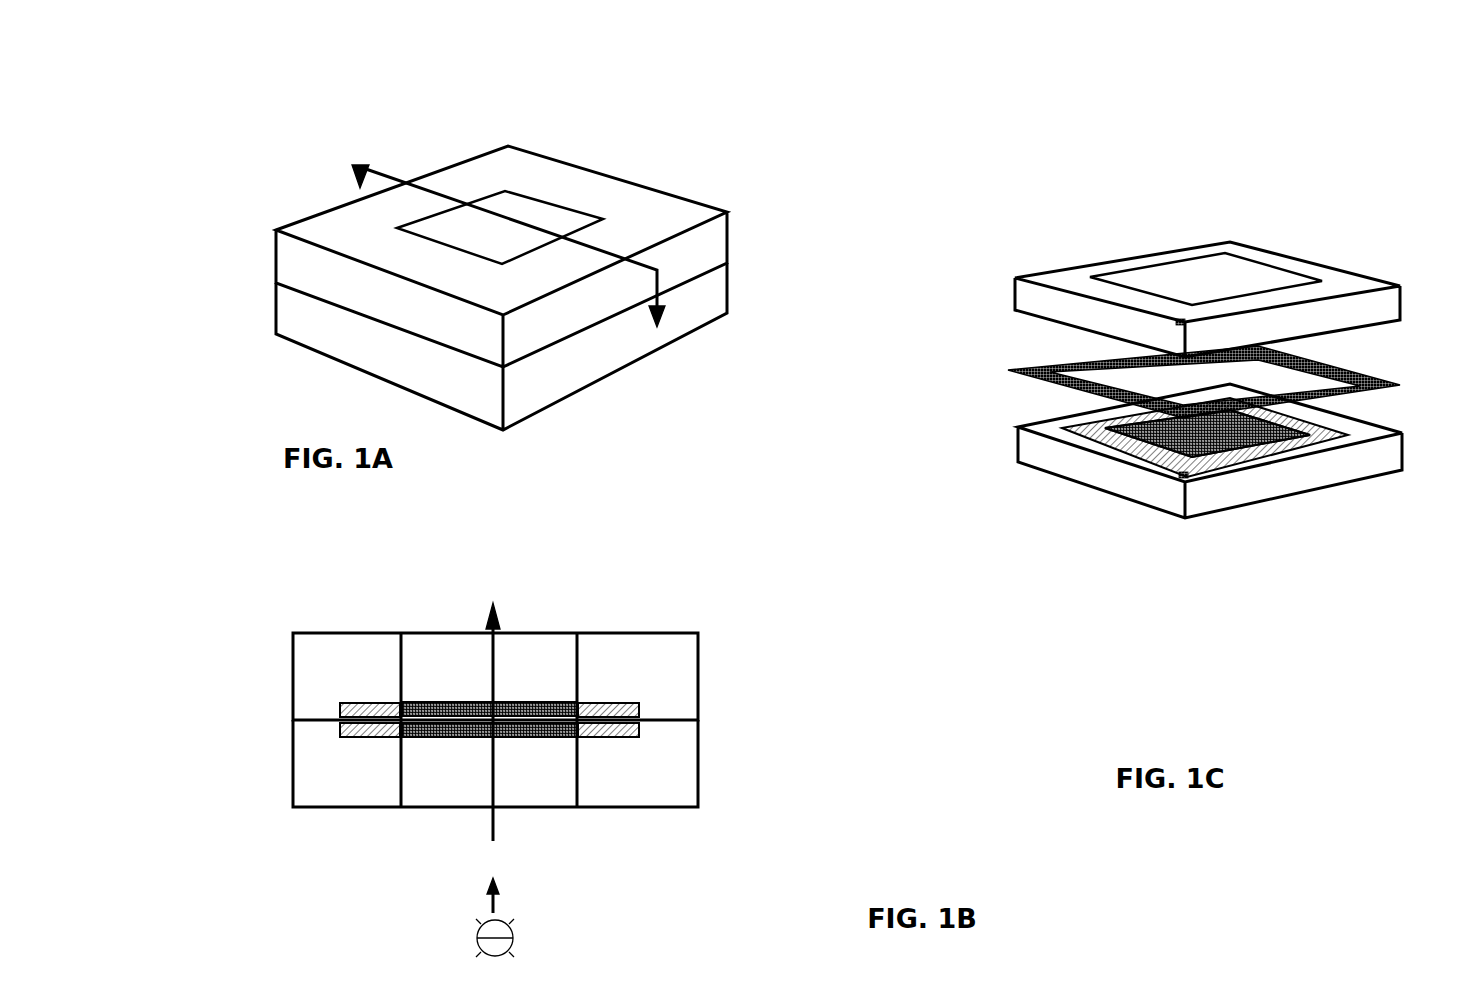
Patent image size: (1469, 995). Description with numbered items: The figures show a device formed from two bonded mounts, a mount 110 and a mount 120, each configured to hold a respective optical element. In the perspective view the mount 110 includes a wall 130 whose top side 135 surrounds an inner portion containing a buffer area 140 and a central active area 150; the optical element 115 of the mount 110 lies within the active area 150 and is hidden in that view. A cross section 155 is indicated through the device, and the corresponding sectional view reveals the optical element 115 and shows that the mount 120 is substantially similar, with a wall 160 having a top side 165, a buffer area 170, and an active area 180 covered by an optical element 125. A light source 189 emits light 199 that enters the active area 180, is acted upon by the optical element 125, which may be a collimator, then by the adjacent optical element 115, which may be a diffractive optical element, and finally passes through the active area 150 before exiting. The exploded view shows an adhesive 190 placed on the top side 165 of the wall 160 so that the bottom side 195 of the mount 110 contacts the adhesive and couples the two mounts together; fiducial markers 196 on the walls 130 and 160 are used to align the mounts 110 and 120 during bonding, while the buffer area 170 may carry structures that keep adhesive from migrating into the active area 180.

In FIG. 1A, the mount 110 is at (290, 264).
In FIG. 1B, the mount 110 is at (317, 697).
In FIG. 1C, the mount 110 is at (1022, 285).
In FIG. 1A, the optical element 115 is at (525, 243).
In FIG. 1B, the optical element 115 is at (437, 700).
In FIG. 1A, the mount 120 is at (291, 328).
In FIG. 1B, the mount 120 is at (315, 773).
In FIG. 1C, the mount 120 is at (1098, 478).
In FIG. 1B, the optical element 125 is at (562, 738).
In FIG. 1C, the optical element 125 is at (1257, 433).
In FIG. 1A, the wall 130 is at (313, 227).
In FIG. 1B, the wall 130 is at (673, 648).
In FIG. 1C, the wall 130 is at (1043, 278).
In FIG. 1A, the top side 135 is at (675, 210).
In FIG. 1B, the top side 135 is at (300, 622).
In FIG. 1C, the top side 135 is at (1060, 267).
In FIG. 1B, the buffer area 140 is at (628, 703).
In FIG. 1C, the buffer area 140 is at (1103, 270).
In FIG. 1A, the active area 150 is at (404, 225).
In FIG. 1B, the active area 150 is at (577, 633).
In FIG. 1C, the active area 150 is at (1322, 280).
In FIG. 1A, the cross section 155 is at (617, 253).
In FIG. 1B, the wall 160 is at (683, 732).
In FIG. 1C, the wall 160 is at (1088, 450).
In FIG. 1B, the top side 165 is at (307, 732).
In FIG. 1C, the top side 165 is at (1018, 462).
In FIG. 1B, the buffer area 170 is at (637, 737).
In FIG. 1C, the buffer area 170 is at (1072, 440).
In FIG. 1B, the active area 180 is at (577, 808).
In FIG. 1C, the active area 180 is at (1110, 433).
In FIG. 1B, the light source 189 is at (522, 932).
In FIG. 1C, the adhesive 190 is at (1008, 370).
In FIG. 1C, the bottom side 195 is at (1388, 300).
In FIG. 1C, the fiducial markers 196 is at (1179, 326).
In FIG. 1B, the light 199 is at (525, 758).